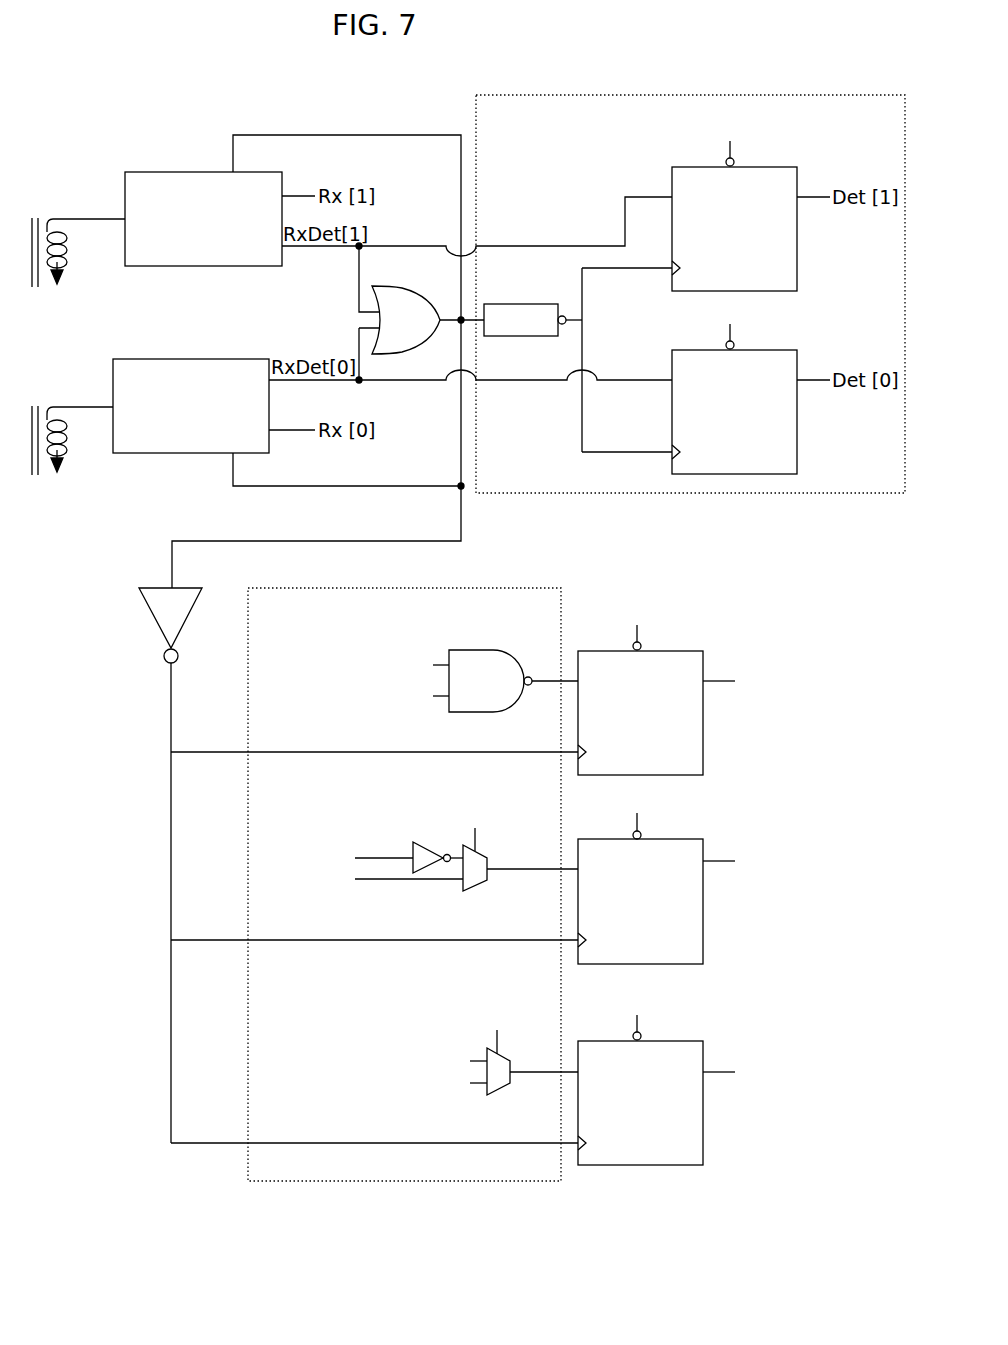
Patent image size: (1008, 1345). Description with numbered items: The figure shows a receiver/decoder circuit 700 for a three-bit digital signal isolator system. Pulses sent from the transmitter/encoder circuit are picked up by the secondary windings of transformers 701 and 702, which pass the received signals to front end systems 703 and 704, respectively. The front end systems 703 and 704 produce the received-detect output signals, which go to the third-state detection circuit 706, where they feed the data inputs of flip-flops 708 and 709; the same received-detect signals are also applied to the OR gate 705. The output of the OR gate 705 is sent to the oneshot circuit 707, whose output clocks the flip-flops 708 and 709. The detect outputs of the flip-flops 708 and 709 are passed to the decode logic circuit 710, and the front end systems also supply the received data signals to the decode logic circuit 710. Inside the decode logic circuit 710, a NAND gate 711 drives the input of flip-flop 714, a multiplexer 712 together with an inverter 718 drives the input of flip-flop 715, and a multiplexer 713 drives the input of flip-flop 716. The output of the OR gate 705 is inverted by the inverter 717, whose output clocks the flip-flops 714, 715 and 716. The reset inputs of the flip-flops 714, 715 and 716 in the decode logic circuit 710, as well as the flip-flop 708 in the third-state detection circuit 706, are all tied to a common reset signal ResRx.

The receiver/decoder circuit 700 is at (142, 90).
The secondary winding of transformer 701 is at (61, 219).
The secondary winding of transformer 702 is at (50, 407).
The front end system 703 is at (150, 172).
The front end system 704 is at (148, 359).
The OR gate 705 is at (390, 288).
The third-state detection circuit 706 is at (690, 294).
The oneshot circuit 707 is at (505, 304).
The flip-flop 708 is at (768, 167).
The flip-flop 709 is at (778, 350).
The decode logic circuit 710 is at (404, 884).
The NAND gate 711 is at (477, 650).
The multiplexer 712 is at (478, 884).
The multiplexer 713 is at (500, 1090).
The flip-flop 714 is at (680, 651).
The flip-flop 715 is at (673, 839).
The flip-flop 716 is at (680, 1041).
The inverter 717 is at (186, 588).
The inverter 718 is at (425, 843).